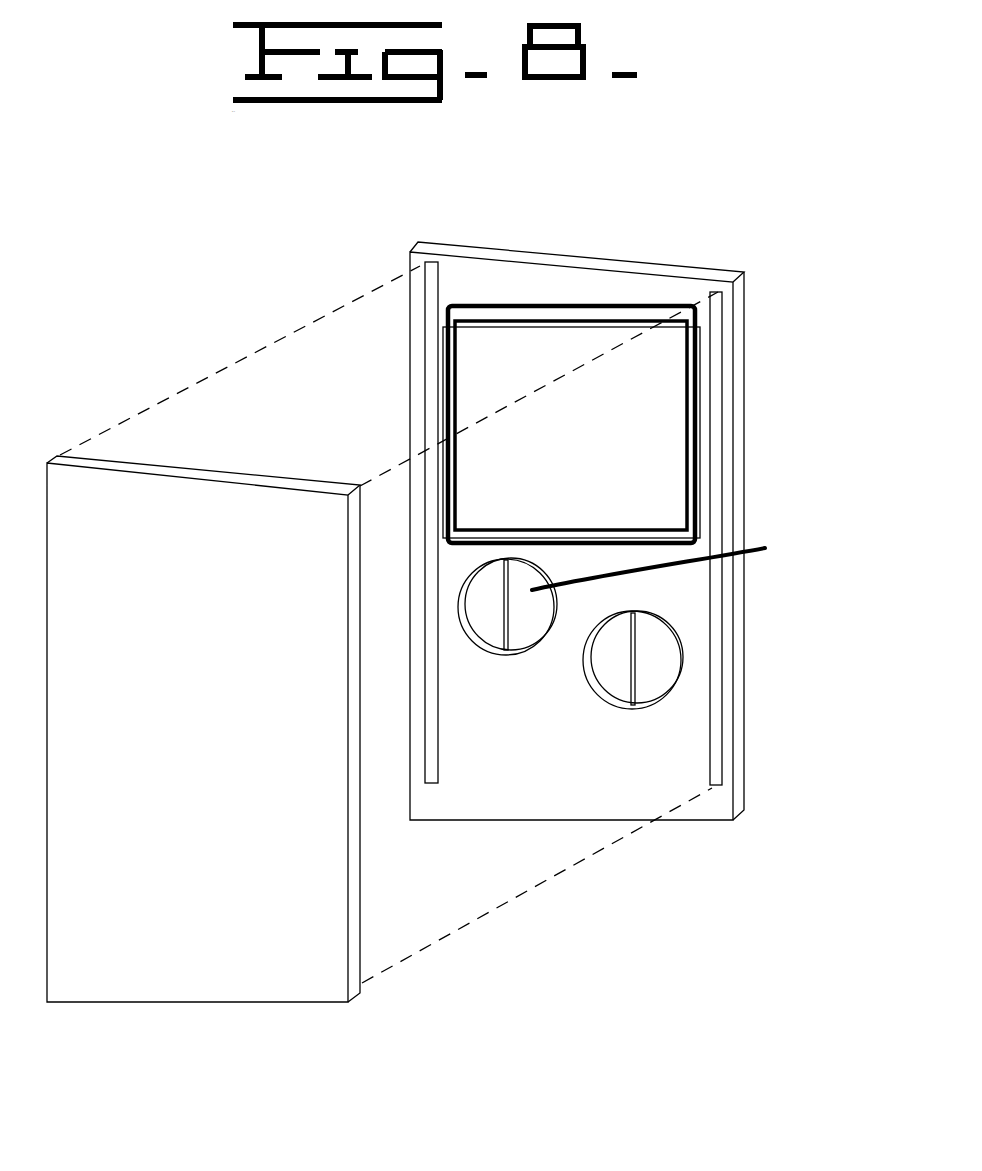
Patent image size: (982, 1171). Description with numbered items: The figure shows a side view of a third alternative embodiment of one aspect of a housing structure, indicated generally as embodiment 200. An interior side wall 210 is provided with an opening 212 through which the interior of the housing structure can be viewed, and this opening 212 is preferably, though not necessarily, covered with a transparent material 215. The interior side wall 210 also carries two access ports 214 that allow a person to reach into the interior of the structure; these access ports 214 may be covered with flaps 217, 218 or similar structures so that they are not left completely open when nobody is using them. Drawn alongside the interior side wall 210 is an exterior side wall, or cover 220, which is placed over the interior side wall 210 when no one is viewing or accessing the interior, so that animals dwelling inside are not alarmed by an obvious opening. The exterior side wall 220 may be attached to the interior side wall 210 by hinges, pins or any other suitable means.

The housing structure aspect alternative embodiment 200 is at (704, 203).
The interior side wall 210 is at (687, 588).
The opening 212 is at (680, 435).
The access ports 214 is at (607, 667).
The transparent material 215 is at (672, 380).
The flap 217 is at (478, 617).
The flap 218 is at (660, 680).
The exterior side wall 220 is at (215, 748).